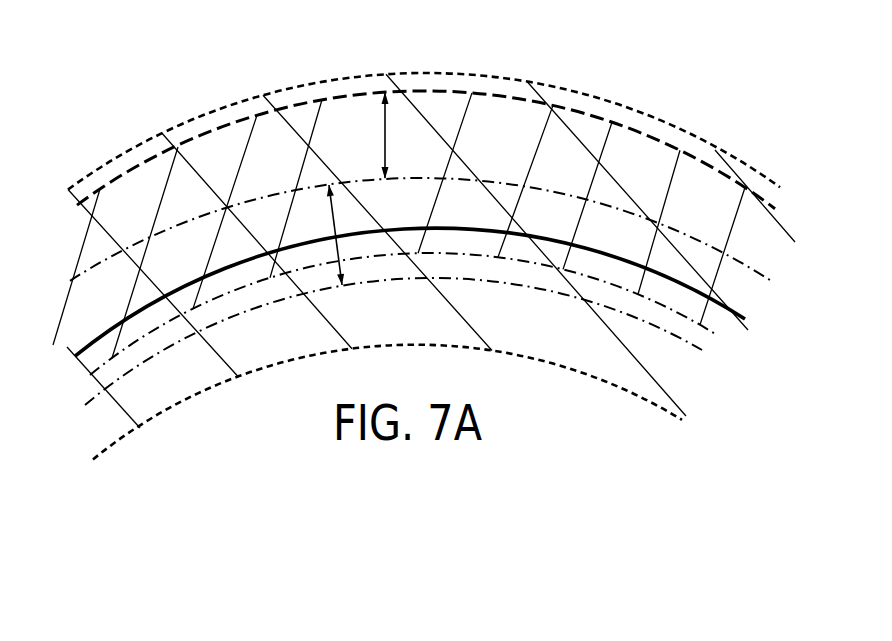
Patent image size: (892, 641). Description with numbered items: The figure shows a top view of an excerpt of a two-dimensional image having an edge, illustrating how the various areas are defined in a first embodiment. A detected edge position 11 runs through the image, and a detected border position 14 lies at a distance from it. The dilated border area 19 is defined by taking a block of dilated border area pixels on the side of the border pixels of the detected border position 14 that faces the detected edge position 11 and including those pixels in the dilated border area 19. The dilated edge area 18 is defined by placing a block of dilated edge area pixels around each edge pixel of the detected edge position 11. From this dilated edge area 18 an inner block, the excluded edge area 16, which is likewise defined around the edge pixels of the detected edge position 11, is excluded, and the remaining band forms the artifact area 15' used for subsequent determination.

The detected edge position 11 is at (618, 262).
The detected border position 14 is at (657, 145).
The artifact area 15' is at (420, 145).
The excluded edge area 16 is at (345, 245).
The dilated edge area 18 is at (300, 137).
The dilated border area 19 is at (165, 192).